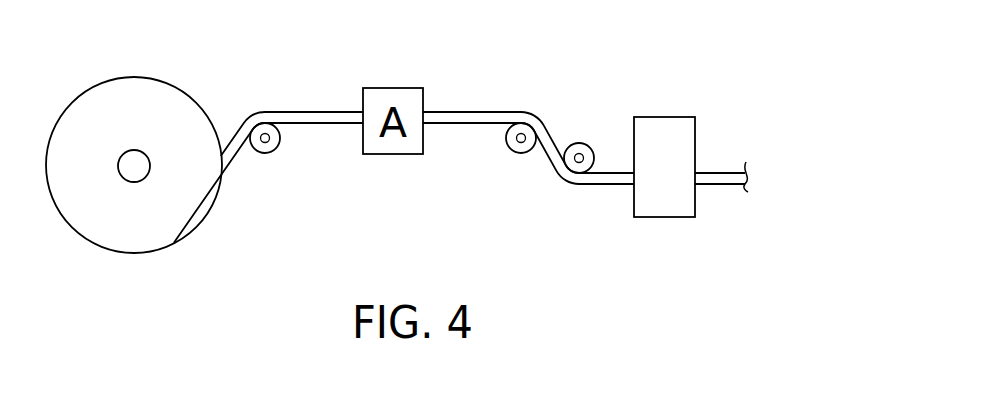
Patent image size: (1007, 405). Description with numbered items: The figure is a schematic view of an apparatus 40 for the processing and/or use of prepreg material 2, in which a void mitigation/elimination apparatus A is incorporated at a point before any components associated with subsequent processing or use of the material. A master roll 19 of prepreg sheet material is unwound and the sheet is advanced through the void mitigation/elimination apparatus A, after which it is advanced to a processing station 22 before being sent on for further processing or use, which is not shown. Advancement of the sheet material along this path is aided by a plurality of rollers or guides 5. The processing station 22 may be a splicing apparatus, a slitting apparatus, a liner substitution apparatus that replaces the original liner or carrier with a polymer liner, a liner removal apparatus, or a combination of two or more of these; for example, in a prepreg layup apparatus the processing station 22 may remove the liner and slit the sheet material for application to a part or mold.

The prepreg material 2 is at (316, 111).
The rollers or guides 5 is at (266, 153).
The master roll 19 is at (165, 228).
The processing station 22 is at (665, 205).
The apparatus 40 is at (466, 81).